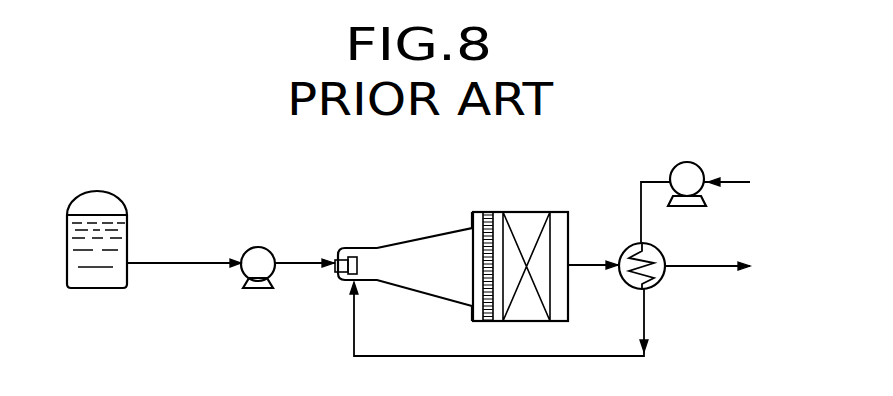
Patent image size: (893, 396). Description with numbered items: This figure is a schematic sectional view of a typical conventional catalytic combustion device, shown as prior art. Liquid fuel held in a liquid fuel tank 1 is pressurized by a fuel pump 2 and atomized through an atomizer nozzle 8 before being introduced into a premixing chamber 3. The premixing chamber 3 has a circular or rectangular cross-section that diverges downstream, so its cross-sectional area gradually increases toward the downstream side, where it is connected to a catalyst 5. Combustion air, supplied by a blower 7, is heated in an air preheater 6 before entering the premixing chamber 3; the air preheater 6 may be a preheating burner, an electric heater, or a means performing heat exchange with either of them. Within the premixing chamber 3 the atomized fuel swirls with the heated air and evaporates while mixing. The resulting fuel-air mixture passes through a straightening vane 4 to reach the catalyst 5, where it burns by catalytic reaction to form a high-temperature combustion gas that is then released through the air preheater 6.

The liquid fuel tank 1 is at (118, 246).
The fuel pump 2 is at (258, 247).
The premixing chamber 3 is at (412, 256).
The straightening vane 4 is at (488, 212).
The catalyst 5 is at (526, 222).
The air preheater 6 is at (661, 281).
The blower 7 is at (692, 163).
The atomizer nozzle 8 is at (350, 256).